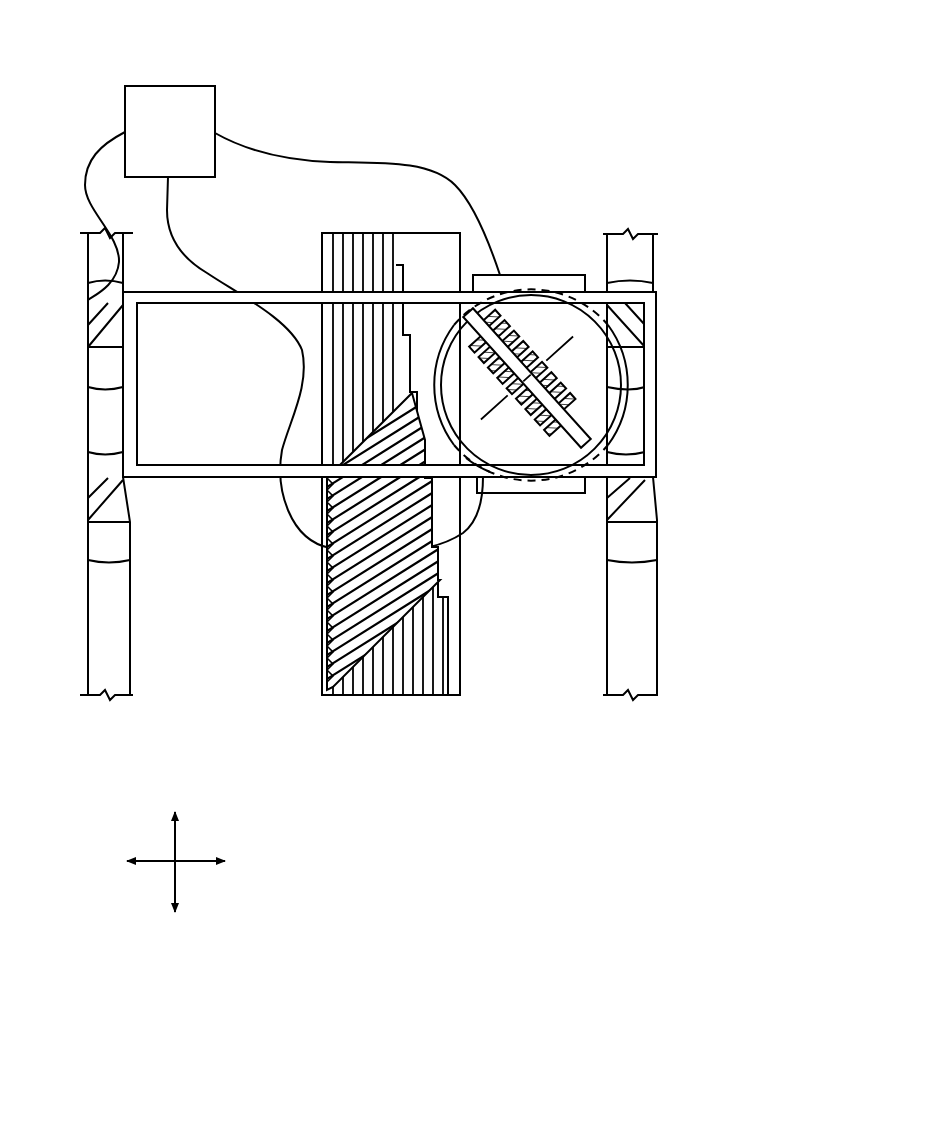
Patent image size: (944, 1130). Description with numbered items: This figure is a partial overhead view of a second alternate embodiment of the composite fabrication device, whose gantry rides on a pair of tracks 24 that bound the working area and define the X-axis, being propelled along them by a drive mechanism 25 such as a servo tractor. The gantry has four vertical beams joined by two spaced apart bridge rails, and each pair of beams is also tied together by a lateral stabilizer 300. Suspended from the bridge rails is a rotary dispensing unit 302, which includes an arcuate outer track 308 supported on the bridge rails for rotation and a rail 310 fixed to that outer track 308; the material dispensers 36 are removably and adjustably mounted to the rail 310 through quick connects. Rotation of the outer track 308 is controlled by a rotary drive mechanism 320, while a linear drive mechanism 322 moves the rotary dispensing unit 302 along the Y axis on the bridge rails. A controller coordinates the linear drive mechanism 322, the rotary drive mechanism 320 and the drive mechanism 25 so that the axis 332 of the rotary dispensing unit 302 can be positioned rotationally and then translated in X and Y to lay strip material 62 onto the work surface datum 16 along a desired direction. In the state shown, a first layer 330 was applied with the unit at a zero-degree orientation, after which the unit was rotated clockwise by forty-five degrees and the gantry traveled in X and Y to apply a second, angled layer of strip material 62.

The work surface datum 16 is at (453, 687).
The tracks 24 is at (117, 597).
The drive mechanism 25 is at (88, 298).
The material dispensers 36 is at (556, 452).
The strip material 62 is at (375, 703).
The lateral stabilizers 300 is at (128, 418).
The rotary dispensing unit 302 is at (566, 395).
The arcuate outer track 308 is at (478, 455).
The rail 310 is at (582, 432).
The rotary drive mechanism 320 is at (557, 391).
The linear drive mechanism 322 is at (526, 284).
The first layer 330 is at (345, 263).
The axis 332 is at (568, 344).